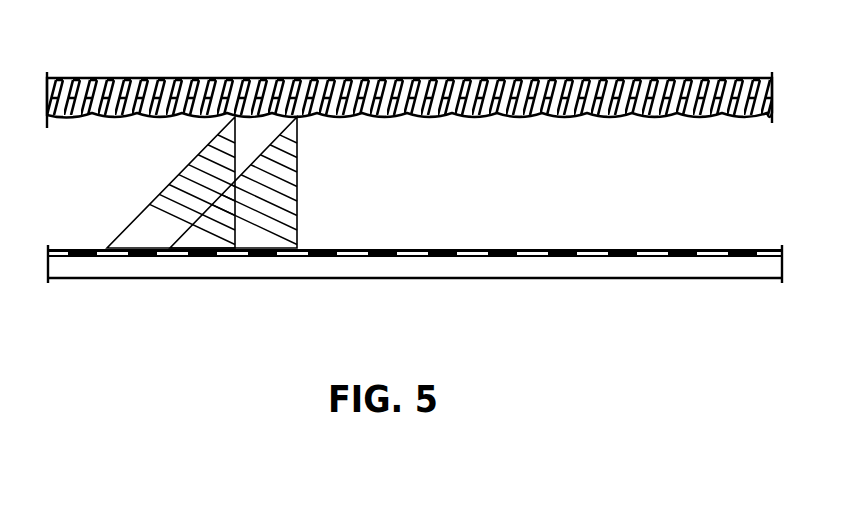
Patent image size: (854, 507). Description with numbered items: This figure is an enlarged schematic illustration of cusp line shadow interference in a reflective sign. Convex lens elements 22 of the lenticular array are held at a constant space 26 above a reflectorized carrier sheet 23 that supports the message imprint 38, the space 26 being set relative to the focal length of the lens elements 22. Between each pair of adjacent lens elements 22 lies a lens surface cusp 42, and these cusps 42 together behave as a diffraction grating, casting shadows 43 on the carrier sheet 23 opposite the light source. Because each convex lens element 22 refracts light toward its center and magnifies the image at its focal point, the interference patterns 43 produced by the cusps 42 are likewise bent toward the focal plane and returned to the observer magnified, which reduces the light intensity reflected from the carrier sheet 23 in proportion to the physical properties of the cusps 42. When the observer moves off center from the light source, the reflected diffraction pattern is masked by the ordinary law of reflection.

The lens element 22 is at (473, 118).
The space 26 is at (575, 170).
The message imprint 38 is at (625, 248).
The reflective carrier sheet 23 is at (568, 268).
The lens surface cusp 42 is at (292, 118).
The shadows 43 is at (270, 225).